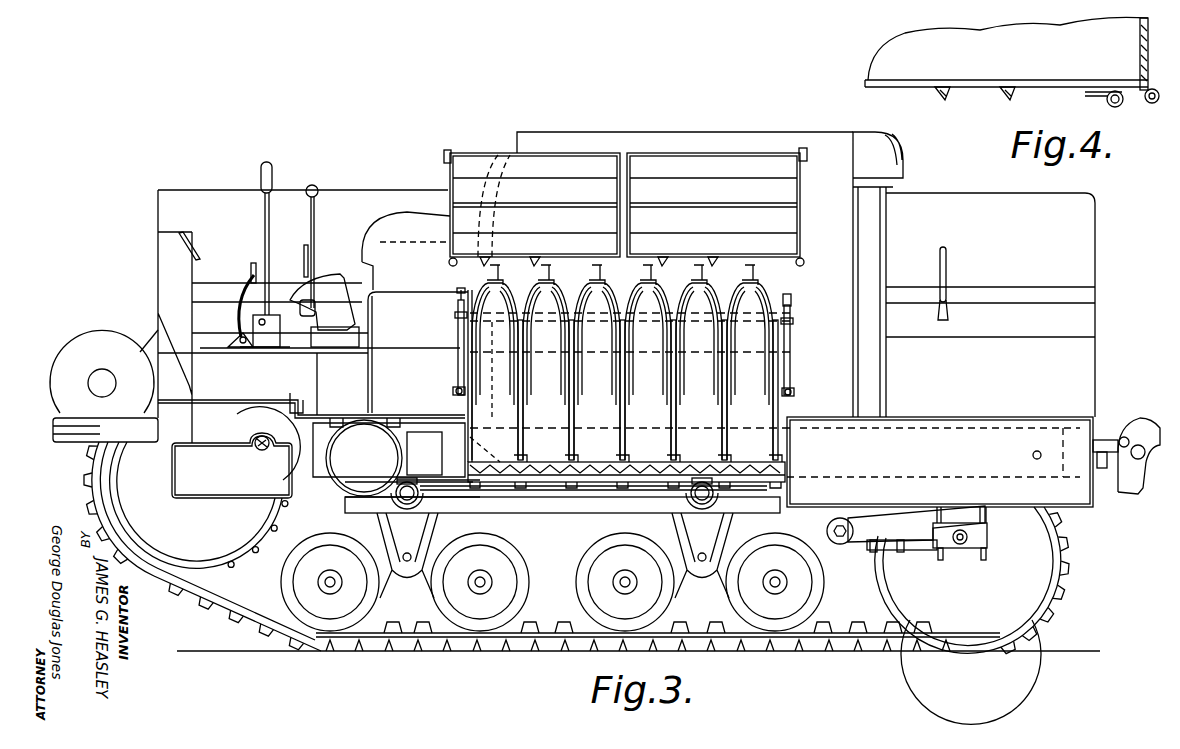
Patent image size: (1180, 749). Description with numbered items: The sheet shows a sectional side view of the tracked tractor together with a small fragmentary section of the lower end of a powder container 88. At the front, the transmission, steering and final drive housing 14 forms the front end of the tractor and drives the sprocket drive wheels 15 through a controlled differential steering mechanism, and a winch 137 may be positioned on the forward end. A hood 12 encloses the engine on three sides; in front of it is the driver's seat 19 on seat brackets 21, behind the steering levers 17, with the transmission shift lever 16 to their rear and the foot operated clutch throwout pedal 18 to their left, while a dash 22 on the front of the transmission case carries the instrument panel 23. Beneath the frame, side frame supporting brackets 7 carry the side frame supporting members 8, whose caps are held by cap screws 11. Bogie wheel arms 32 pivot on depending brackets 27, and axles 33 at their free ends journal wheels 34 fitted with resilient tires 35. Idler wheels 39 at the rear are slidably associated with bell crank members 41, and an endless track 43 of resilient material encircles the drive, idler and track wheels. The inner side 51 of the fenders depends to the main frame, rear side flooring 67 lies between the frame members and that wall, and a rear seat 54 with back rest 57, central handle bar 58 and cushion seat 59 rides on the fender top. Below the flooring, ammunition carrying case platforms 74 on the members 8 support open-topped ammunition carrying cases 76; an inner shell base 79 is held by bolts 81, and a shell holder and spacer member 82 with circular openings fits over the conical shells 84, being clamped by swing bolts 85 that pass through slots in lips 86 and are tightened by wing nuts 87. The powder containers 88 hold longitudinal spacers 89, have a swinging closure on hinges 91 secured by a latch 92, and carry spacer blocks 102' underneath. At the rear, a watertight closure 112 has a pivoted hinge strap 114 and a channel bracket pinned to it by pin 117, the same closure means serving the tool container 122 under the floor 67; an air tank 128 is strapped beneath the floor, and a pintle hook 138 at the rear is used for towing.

In FIG. 3, the side frame supporting brackets 7 is at (435, 505).
In FIG. 3, the side frame supporting members 8 is at (554, 509).
In FIG. 3, the cap screws 11 is at (380, 513).
In FIG. 3, the hood 12 is at (735, 132).
In FIG. 3, the transmission, steering and final drive housing 14 is at (256, 395).
In FIG. 3, the sprocket drive wheels 15 is at (258, 532).
In FIG. 3, the transmission shift lever 16 is at (316, 222).
In FIG. 3, the steering levers 17 is at (264, 243).
In FIG. 3, the clutch throwout pedal 18 is at (240, 283).
In FIG. 3, the driver's seat 19 is at (400, 228).
In FIG. 3, the seat brackets 21 is at (407, 292).
In FIG. 3, the dash 22 is at (166, 278).
In FIG. 3, the instrument panel 23 is at (193, 248).
In FIG. 3, the depending brackets 27 is at (440, 535).
In FIG. 3, the bogie wheel arms 32 is at (555, 559).
In FIG. 3, the axles 33 is at (330, 575).
In FIG. 3, the wheels 34 is at (552, 582).
In FIG. 3, the resilient tires 35 is at (535, 563).
In FIG. 3, the idler wheels 39 is at (971, 644).
In FIG. 3, the bell crank members 41 is at (898, 518).
In FIG. 3, the endless track 43 is at (1088, 553).
In FIG. 3, the inner side of fenders 51 is at (975, 379).
In FIG. 3, the rear seats 54 is at (990, 305).
In FIG. 3, the back rest 57 is at (1097, 245).
In FIG. 3, the central handle bar 58 is at (948, 277).
In FIG. 3, the cushion seat 59 is at (1098, 328).
In FIG. 3, the rear side flooring 67 is at (958, 417).
In FIG. 3, the ammunition carrying case platforms 74 is at (540, 513).
In FIG. 3, the ammunition carrying cases 76 is at (787, 412).
In FIG. 3, the inner shell base 79 is at (628, 462).
In FIG. 3, the bolts 81 is at (520, 462).
In FIG. 3, the shell holder and spacer member 82 is at (458, 347).
In FIG. 3, the shells 84 is at (695, 298).
In FIG. 3, the swing bolts 85 is at (458, 368).
In FIG. 3, the lips 86 is at (453, 333).
In FIG. 3, the wing nuts 87 is at (455, 310).
In FIG. 3, the powder containers 88 is at (815, 193).
In FIG. 4, the powder containers 88 is at (1006, 53).
In FIG. 3, the longitudinal spacers 89 is at (548, 207).
In FIG. 3, the hinges 91 is at (444, 156).
In FIG. 3, the latch 92 is at (450, 262).
In FIG. 4, the latch 92 is at (1152, 103).
In FIG. 3, the spacer blocks 102' is at (621, 249).
In FIG. 4, the spacer blocks 102' is at (975, 101).
In FIG. 3, the watertight closure 112 is at (1092, 498).
In FIG. 3, the hinge strap 114 is at (1106, 470).
In FIG. 3, the pin 117 is at (1116, 422).
In FIG. 3, the tool container 122 is at (933, 452).
In FIG. 3, the air tank 128 is at (385, 445).
In FIG. 3, the winch 137 is at (104, 386).
In FIG. 3, the pintle hook 138 is at (1142, 496).